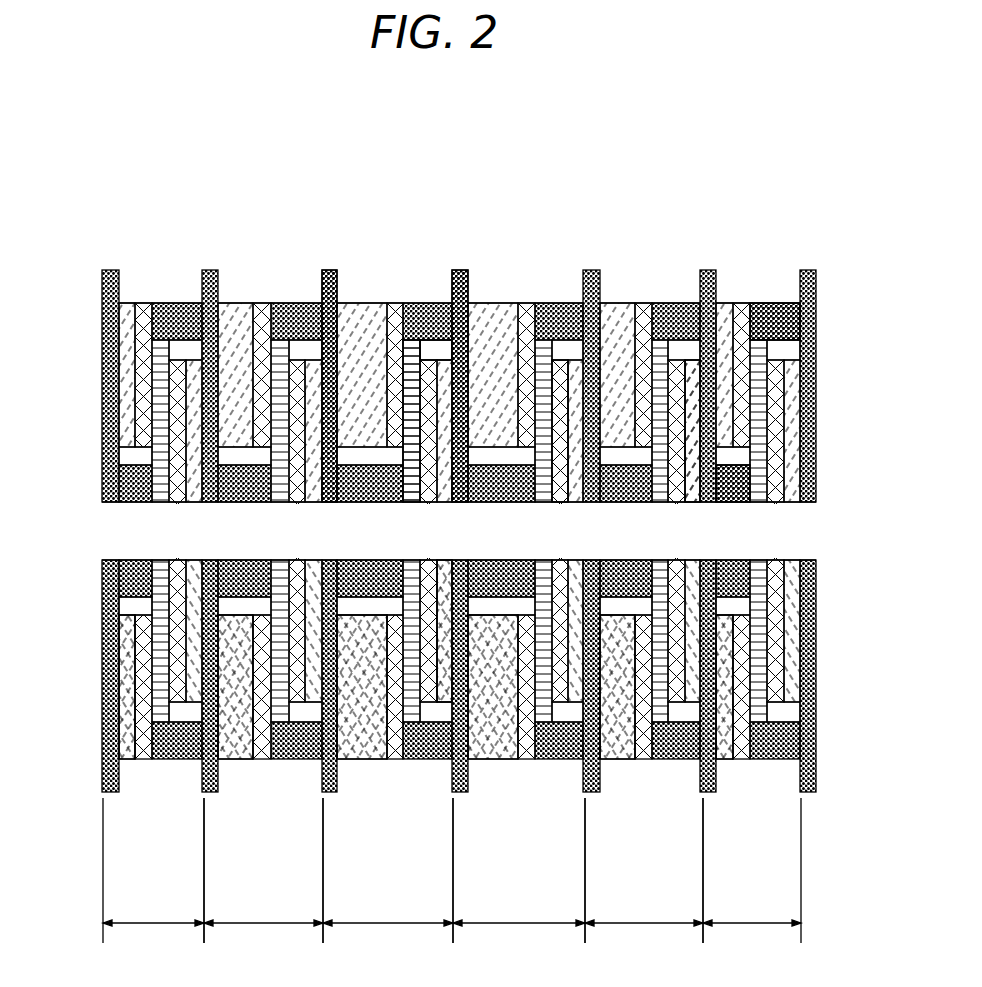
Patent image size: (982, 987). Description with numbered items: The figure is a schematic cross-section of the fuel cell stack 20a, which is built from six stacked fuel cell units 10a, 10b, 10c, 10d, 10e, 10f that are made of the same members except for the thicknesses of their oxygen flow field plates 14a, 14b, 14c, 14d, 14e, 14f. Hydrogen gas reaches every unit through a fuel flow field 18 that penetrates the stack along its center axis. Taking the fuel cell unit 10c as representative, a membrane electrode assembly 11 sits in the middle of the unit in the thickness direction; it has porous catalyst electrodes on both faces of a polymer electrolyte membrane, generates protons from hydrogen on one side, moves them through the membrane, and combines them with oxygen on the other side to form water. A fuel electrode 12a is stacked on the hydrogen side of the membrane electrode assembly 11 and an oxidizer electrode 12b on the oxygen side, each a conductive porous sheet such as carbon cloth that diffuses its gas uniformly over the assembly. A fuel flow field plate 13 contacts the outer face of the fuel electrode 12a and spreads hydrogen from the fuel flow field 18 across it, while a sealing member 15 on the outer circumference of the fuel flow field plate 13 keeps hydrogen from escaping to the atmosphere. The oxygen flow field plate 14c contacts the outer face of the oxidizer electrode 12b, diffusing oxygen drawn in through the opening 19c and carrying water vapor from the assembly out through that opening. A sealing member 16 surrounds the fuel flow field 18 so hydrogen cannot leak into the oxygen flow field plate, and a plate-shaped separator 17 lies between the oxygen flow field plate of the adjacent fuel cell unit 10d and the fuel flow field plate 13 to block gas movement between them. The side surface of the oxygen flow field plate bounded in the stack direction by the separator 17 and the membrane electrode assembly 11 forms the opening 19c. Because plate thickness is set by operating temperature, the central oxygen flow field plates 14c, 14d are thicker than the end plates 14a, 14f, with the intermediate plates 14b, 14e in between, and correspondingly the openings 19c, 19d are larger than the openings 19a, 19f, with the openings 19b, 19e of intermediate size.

The fuel cell unit 10a is at (153, 870).
The fuel cell unit 10b is at (263, 870).
The fuel cell unit 10c is at (388, 870).
The fuel cell unit 10d is at (519, 870).
The fuel cell unit 10e is at (644, 870).
The fuel cell unit 10f is at (752, 870).
The membrane electrode assembly 11 is at (428, 366).
The fuel electrode 12a is at (434, 330).
The oxidizer electrode 12b is at (410, 378).
The fuel flow field plate 13 is at (692, 386).
The oxygen flow field plate 14a is at (128, 745).
The oxygen flow field plate 14b is at (240, 745).
The oxygen flow field plate 14c is at (360, 745).
The oxygen flow field plate 14d is at (493, 745).
The oxygen flow field plate 14e is at (617, 745).
The oxygen flow field plate 14f is at (722, 745).
The sealing member 15 is at (781, 301).
The sealing member 16 is at (741, 505).
The separator 17 is at (332, 270).
The fuel flow field 18 is at (190, 535).
The opening 19a is at (120, 285).
The opening 19b is at (273, 285).
The opening 19c is at (340, 285).
The opening 19d is at (472, 285).
The opening 19e is at (602, 285).
The opening 19f is at (720, 285).
The fuel cell stack 20a is at (545, 150).